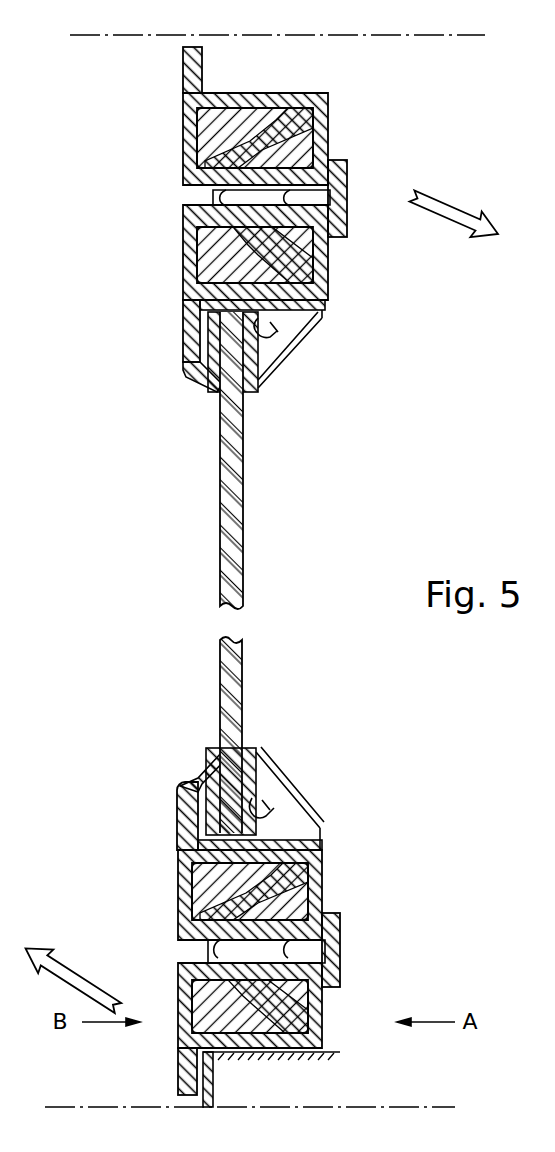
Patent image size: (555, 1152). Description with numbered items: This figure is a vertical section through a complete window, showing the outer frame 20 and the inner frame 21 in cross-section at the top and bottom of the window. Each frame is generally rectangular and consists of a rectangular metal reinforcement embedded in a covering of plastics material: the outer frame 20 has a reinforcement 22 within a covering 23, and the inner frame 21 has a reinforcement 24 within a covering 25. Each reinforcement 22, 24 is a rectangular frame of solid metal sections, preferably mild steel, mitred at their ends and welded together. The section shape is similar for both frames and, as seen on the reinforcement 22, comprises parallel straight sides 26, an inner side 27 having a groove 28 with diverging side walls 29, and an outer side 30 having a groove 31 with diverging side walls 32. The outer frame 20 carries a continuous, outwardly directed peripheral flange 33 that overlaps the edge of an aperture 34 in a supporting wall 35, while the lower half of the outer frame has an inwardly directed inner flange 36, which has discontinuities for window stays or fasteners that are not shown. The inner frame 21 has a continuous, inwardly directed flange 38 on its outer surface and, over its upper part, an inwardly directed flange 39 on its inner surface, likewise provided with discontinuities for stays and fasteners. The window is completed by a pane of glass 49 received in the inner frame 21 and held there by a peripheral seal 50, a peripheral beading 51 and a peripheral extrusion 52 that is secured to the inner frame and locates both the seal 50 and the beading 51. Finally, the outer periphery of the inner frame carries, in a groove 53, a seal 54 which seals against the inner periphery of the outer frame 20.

The outer frame 20 is at (334, 126).
The inner frame 21 is at (350, 215).
The reinforcement 22 is at (303, 118).
The covering 23 is at (300, 103).
The reinforcement 24 is at (305, 268).
The covering 25 is at (320, 246).
The parallel straight sides 26 is at (318, 137).
The inner side 27 is at (330, 151).
The groove 28 is at (212, 196).
The diverging side walls 29 is at (318, 186).
The outer side 30 is at (209, 109).
The groove 31 is at (255, 120).
The diverging side walls 32 is at (236, 110).
The peripheral flange 33 is at (188, 62).
The aperture 34 is at (300, 1049).
The supporting wall 35 is at (203, 1099).
The inner flange 36 is at (332, 932).
The flange 38 is at (190, 325).
The flange 39 is at (346, 197).
The pane of glass 49 is at (235, 531).
The peripheral seal 50 is at (213, 386).
The peripheral beading 51 is at (300, 356).
The peripheral extrusion 52 is at (285, 325).
The groove 53 is at (225, 958).
The seal 54 is at (212, 947).